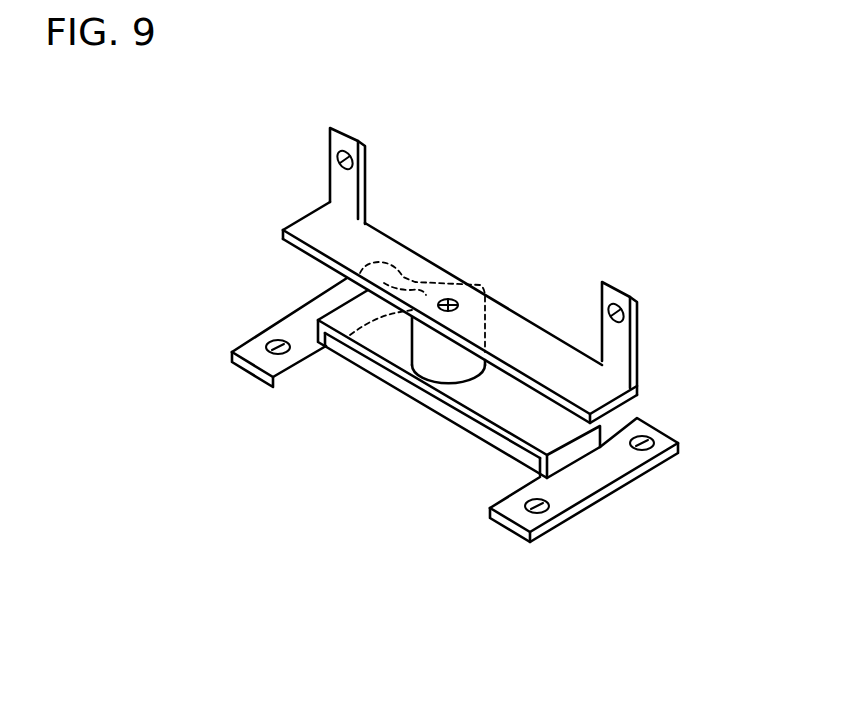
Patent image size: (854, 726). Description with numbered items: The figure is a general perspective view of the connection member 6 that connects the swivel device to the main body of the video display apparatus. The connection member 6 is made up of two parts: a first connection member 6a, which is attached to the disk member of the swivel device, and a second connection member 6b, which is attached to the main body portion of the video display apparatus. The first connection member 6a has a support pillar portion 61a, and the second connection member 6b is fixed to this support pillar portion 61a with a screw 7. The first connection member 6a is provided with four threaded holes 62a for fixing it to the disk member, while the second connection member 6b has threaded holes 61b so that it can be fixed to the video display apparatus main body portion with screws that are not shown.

The connection member 6 is at (172, 199).
The first connection member 6a is at (286, 325).
The second connection member 6b is at (283, 230).
The screw 7 is at (458, 300).
The support pillar portion 61a is at (438, 367).
The threaded holes 61b is at (352, 161).
The threaded holes 62a is at (408, 268).